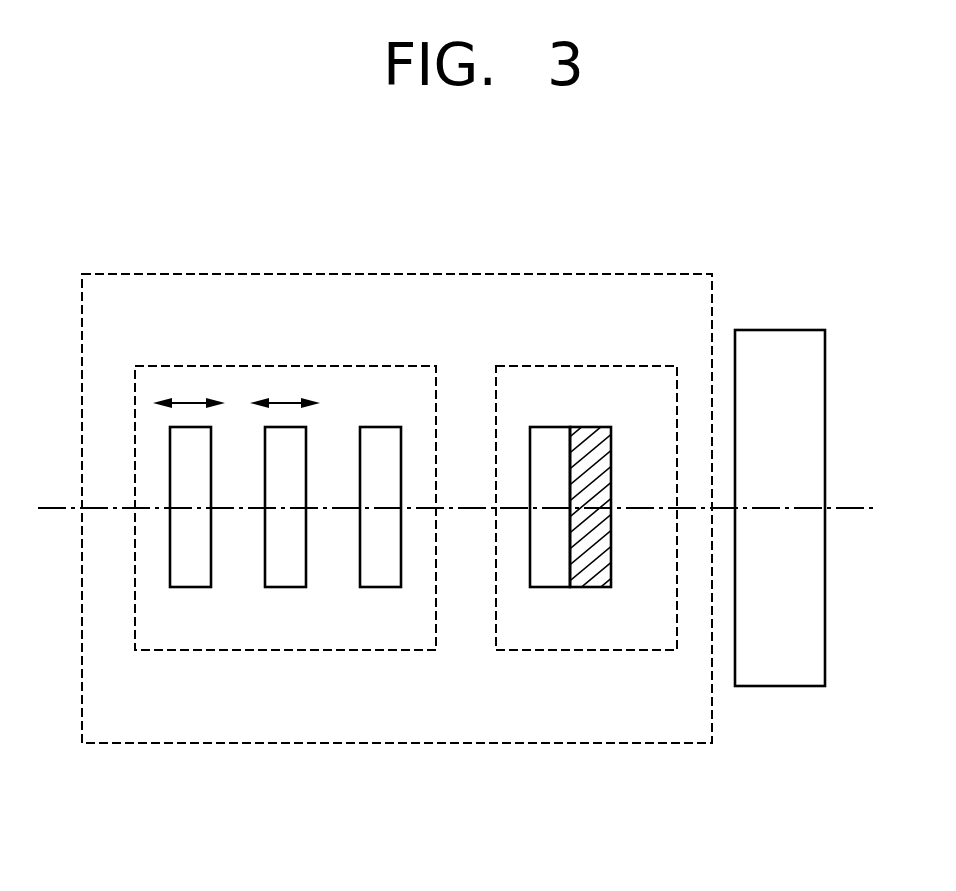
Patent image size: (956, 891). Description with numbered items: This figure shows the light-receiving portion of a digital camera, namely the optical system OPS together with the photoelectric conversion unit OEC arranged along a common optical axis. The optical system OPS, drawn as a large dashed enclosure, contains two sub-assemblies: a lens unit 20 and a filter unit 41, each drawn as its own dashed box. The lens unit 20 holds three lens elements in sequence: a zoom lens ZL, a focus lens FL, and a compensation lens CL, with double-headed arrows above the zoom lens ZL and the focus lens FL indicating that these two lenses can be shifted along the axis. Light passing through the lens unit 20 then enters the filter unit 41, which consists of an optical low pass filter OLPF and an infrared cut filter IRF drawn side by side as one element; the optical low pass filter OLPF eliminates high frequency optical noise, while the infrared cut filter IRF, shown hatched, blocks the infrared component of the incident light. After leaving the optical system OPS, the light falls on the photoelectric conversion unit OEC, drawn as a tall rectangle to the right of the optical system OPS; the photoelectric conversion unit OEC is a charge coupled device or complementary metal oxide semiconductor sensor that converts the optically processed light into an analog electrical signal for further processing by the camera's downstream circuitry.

The optical system OPS is at (397, 274).
The photoelectric conversion unit OEC is at (780, 330).
The lens unit 20 is at (287, 366).
The filter unit 41 is at (592, 366).
The zoom lens ZL is at (190, 587).
The focus lens FL is at (286, 587).
The compensation lens CL is at (380, 587).
The optical low pass filter OLPF is at (545, 587).
The infrared cut filter IRF is at (597, 587).